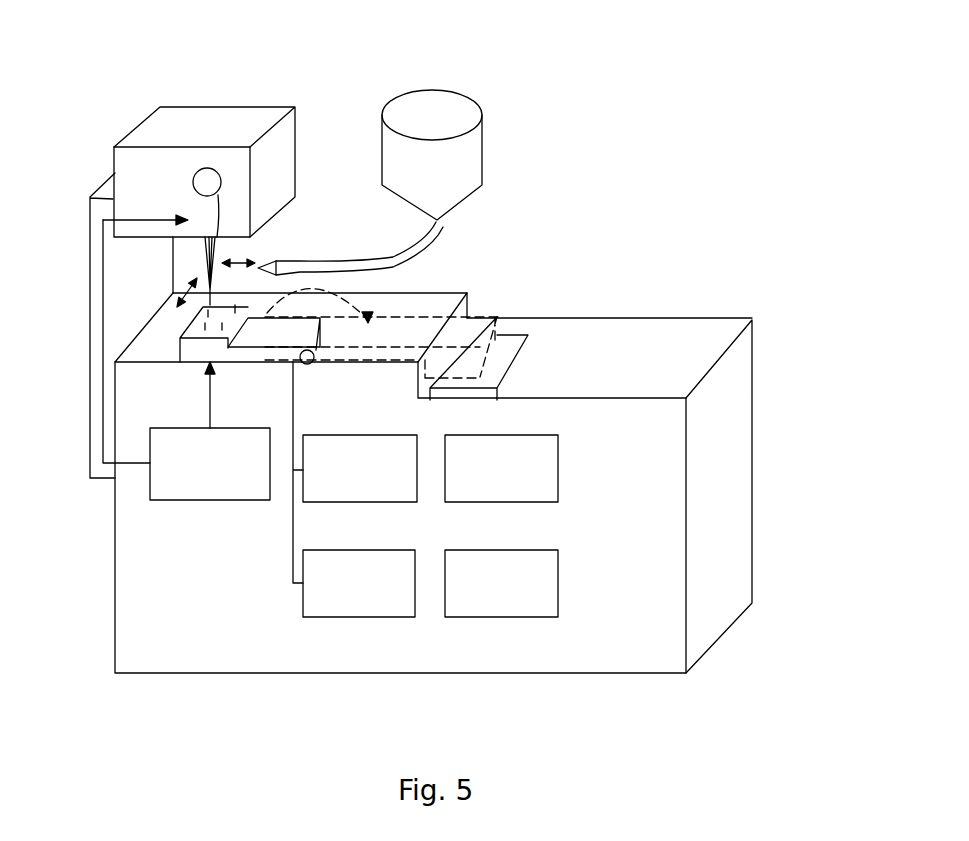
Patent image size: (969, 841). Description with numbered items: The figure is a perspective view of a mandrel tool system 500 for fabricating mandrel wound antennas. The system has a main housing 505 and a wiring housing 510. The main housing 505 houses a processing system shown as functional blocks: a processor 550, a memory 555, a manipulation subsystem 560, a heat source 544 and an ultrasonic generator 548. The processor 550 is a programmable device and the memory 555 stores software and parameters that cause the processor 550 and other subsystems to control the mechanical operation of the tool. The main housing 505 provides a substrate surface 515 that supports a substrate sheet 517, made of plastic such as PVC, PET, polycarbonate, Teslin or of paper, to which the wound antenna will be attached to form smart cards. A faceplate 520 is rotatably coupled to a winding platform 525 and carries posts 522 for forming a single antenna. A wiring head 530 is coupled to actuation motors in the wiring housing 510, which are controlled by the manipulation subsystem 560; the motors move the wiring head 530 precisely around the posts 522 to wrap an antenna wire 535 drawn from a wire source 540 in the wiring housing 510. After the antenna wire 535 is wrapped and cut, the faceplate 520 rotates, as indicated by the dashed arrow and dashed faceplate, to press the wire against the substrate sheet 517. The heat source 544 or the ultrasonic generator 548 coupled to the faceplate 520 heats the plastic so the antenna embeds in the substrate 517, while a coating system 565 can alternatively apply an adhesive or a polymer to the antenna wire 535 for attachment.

The mandrel tool system 500 is at (661, 99).
The main housing 505 is at (748, 488).
The wiring housing 510 is at (172, 117).
The substrate surface 515 is at (677, 345).
The substrate sheet 517 is at (523, 333).
The faceplate 520 is at (190, 333).
The posts 522 is at (240, 311).
The winding platform 525 is at (400, 302).
The wiring head 530 is at (220, 253).
The antenna wire 535 is at (222, 222).
The wire source 540 is at (213, 169).
The heat source 544 is at (325, 435).
The ultrasonic generator 548 is at (327, 617).
The processor 550 is at (543, 502).
The memory 555 is at (535, 617).
The manipulation subsystem 560 is at (245, 500).
The coating system 565 is at (483, 140).